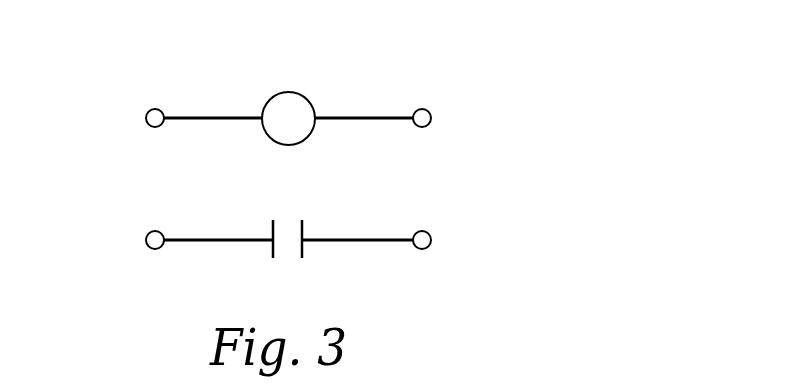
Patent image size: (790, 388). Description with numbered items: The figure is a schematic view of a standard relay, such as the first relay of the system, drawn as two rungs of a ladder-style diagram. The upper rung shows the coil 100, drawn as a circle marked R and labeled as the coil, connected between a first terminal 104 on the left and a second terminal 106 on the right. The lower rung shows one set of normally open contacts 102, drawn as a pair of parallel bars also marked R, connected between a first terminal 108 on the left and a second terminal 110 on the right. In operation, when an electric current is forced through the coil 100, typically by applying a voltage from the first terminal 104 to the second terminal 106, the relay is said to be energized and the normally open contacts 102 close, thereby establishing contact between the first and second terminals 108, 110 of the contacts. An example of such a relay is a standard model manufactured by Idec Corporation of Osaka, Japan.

The coil 100 is at (327, 83).
The normally open contacts 102 is at (322, 272).
The first terminal of the coil 104 is at (146, 112).
The second terminal of the coil 106 is at (431, 118).
The first terminal of the normally open contacts 108 is at (146, 240).
The second terminal of the normally open contacts 110 is at (431, 240).